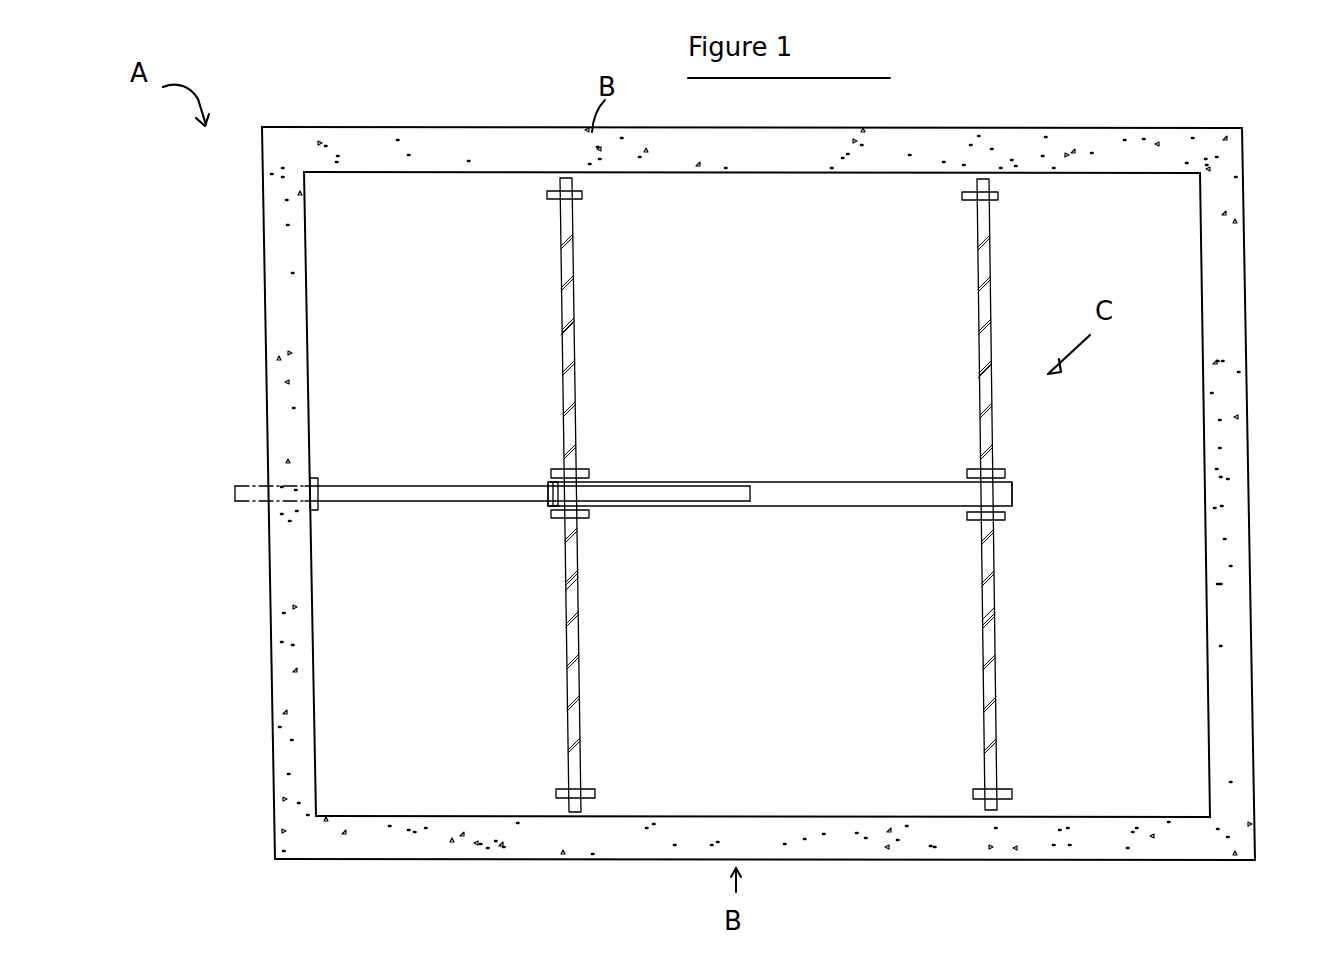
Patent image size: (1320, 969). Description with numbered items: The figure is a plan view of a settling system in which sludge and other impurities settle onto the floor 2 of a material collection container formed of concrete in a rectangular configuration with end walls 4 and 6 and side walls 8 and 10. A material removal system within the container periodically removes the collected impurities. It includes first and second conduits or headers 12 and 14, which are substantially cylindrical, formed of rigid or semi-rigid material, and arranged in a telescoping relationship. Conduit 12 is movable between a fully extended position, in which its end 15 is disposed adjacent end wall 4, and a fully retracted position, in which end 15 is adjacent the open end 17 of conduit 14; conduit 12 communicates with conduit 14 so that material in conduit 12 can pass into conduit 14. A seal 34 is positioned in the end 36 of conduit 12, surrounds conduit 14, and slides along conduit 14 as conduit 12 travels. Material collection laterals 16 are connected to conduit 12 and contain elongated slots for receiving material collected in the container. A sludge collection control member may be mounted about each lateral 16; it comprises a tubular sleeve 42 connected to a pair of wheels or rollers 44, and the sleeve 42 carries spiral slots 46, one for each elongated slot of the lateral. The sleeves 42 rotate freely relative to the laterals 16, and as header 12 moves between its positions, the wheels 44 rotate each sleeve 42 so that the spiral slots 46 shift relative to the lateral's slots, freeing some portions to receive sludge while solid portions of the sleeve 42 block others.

The floor 2 is at (432, 678).
The end wall 4 is at (1240, 590).
The end wall 6 is at (284, 654).
The side wall 8 is at (752, 150).
The side wall 10 is at (918, 850).
The first conduit 12 is at (868, 490).
The second conduit 14 is at (428, 488).
The end of conduit 12 15 is at (1014, 490).
The material collection lateral 16 is at (592, 326).
The open end of conduit 14 17 is at (772, 496).
The seal 34 is at (546, 490).
The end of conduit 12 36 is at (546, 520).
The tubular sleeve 42 is at (560, 333).
The wheel 44 is at (548, 198).
The spiral slot 46 is at (586, 227).